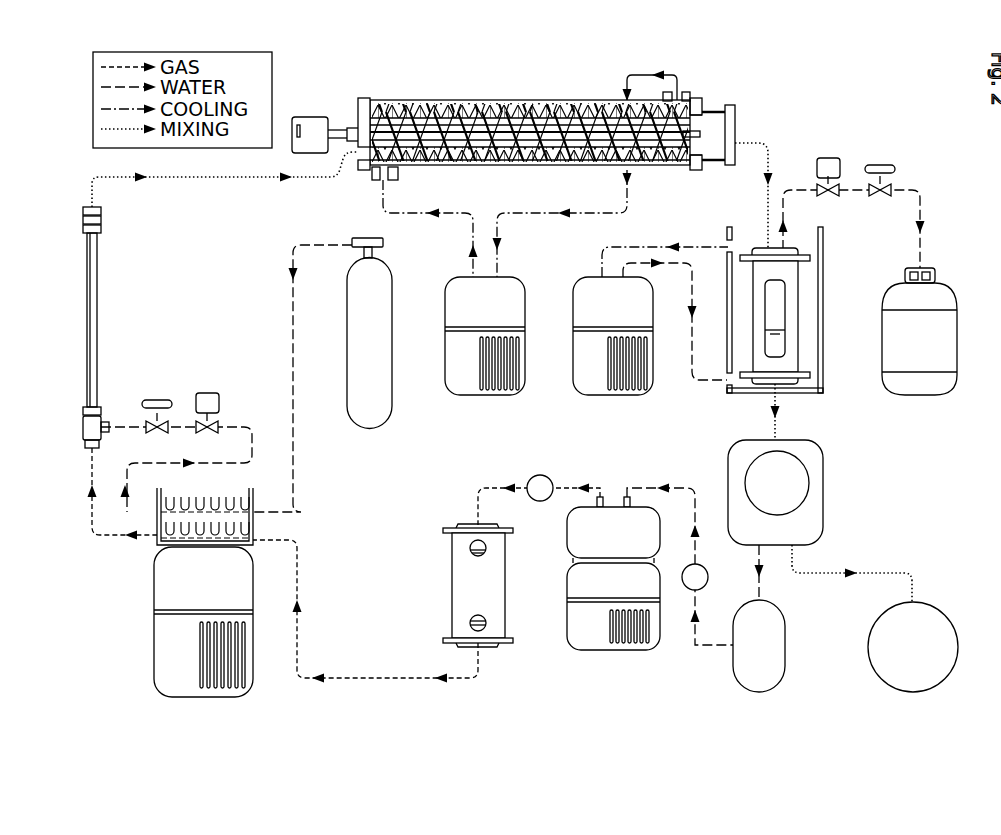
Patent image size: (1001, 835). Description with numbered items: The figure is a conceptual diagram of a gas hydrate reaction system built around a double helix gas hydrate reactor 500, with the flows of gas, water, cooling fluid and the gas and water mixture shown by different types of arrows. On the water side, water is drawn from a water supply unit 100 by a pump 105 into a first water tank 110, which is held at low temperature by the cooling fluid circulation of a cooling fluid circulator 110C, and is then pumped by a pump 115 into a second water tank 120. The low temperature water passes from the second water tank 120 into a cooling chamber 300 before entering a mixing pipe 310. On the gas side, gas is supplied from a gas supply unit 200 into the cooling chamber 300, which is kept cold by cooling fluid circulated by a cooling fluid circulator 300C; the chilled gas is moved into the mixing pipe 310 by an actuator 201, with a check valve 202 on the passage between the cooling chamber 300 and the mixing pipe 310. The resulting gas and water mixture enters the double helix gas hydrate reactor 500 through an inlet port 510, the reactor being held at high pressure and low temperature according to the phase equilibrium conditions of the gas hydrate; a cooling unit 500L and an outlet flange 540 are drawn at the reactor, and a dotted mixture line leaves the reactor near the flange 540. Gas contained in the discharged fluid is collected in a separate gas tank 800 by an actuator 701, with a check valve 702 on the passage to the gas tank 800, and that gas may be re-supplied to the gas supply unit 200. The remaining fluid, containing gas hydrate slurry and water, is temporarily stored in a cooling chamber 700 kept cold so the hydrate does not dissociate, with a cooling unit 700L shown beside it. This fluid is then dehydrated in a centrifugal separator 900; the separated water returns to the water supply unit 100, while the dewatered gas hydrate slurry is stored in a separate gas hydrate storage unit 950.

The water supply unit 100 is at (775, 643).
The pump 105 is at (687, 590).
The first water tank 110 is at (610, 500).
The cooling fluid circulator 110C is at (597, 640).
The pump 115 is at (541, 473).
The second water tank 120 is at (492, 633).
The gas supply unit 200 is at (372, 426).
The actuator 201 is at (207, 393).
The check valve 202 is at (155, 400).
The cooling chamber 300 is at (255, 522).
The cooling fluid circulator 300C is at (153, 583).
The mixing pipe 310 is at (98, 285).
The double helix gas hydrate reactor 500 is at (483, 100).
The reactor cooling unit 500L is at (483, 397).
The inlet port 510 is at (362, 158).
The reactor outlet flange 540 is at (740, 140).
The cooling chamber 700 is at (808, 272).
The separator cooling unit 700L is at (608, 397).
The actuator 701 is at (828, 158).
The check valve 702 is at (880, 165).
The gas tank 800 is at (922, 383).
The centrifugal separator 900 is at (818, 492).
The gas hydrate storage unit 950 is at (930, 622).